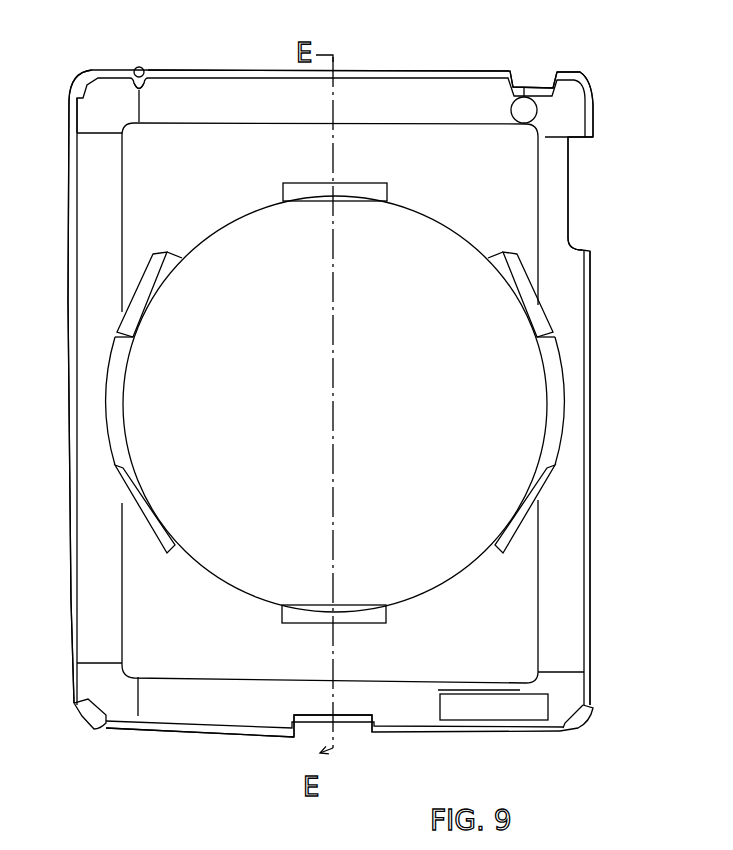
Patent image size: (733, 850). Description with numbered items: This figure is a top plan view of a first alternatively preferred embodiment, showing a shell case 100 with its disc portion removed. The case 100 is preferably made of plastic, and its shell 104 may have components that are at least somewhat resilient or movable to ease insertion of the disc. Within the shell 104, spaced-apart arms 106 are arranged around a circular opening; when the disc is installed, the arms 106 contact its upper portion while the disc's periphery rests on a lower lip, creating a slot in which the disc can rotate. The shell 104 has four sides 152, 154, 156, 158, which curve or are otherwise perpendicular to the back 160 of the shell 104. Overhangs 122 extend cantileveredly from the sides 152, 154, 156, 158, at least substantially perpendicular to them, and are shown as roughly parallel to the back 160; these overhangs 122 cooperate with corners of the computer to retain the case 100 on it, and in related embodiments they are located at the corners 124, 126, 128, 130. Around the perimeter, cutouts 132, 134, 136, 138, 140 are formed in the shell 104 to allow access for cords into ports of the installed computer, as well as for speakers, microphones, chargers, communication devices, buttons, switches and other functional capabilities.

The shell case 100 is at (612, 542).
The shell 104 is at (591, 603).
The arms 106 is at (220, 233).
The overhangs 122 is at (94, 98).
The corner 124 is at (78, 73).
The corner 126 is at (575, 72).
The corner 128 is at (85, 740).
The corner 130 is at (582, 730).
The cutout 132 is at (141, 66).
The cutout 134 is at (536, 68).
The cutout 136 is at (598, 184).
The cutout 138 is at (346, 738).
The cutout 140 is at (480, 706).
The side 152 is at (387, 70).
The side 154 is at (68, 323).
The side 156 is at (193, 733).
The side 158 is at (591, 430).
The back 160 is at (492, 178).